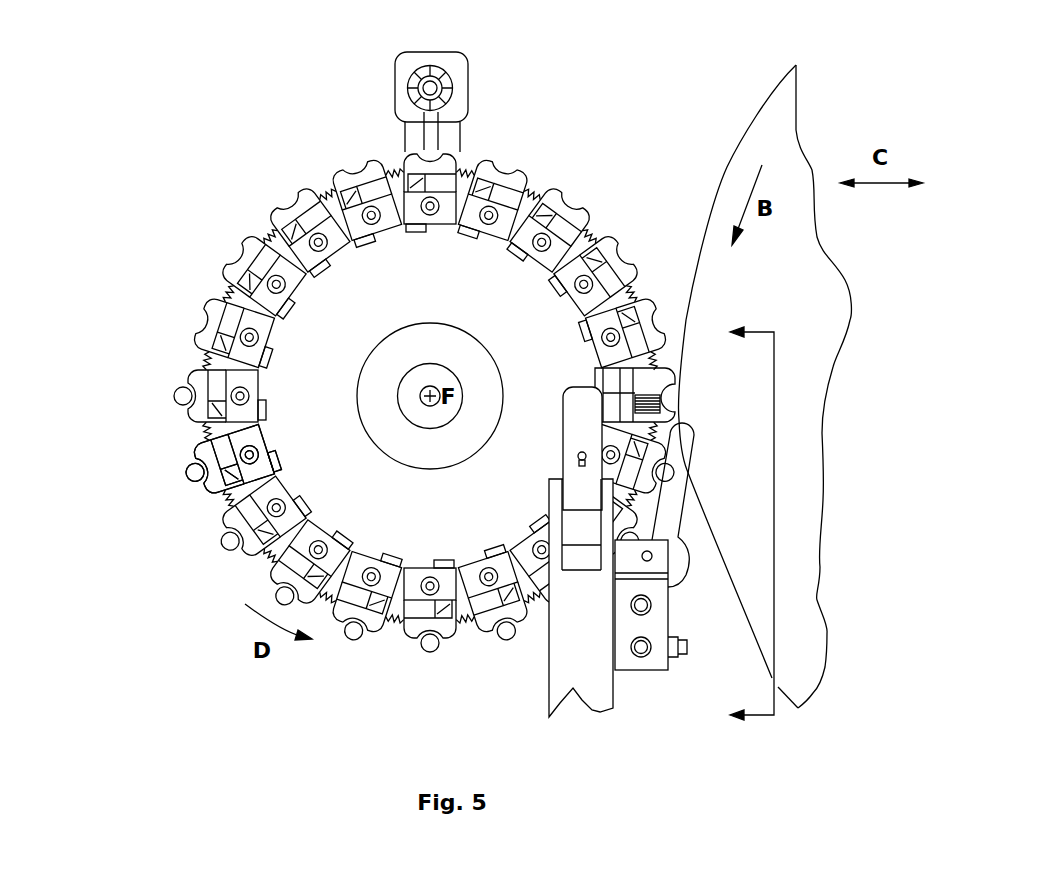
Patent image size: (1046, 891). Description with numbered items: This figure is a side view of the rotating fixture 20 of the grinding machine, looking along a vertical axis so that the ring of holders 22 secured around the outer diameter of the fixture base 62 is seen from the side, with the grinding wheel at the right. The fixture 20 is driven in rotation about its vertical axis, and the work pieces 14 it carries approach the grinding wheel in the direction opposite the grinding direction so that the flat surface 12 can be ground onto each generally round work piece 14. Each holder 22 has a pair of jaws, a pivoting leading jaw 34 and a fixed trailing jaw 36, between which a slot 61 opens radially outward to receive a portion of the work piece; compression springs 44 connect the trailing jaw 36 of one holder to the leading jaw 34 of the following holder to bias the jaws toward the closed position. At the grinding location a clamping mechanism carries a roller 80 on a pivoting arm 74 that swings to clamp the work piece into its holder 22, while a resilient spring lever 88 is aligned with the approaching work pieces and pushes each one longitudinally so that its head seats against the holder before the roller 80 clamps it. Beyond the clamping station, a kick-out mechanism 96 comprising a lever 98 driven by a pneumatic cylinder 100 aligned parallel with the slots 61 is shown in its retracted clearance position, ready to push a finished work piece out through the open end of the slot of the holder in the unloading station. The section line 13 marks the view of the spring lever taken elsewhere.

The flat surface 12 is at (565, 200).
The section line 13 is at (734, 524).
The work piece 14 is at (171, 393).
The fixture 20 is at (435, 685).
The holder 22 is at (638, 215).
The leading jaw 34 is at (556, 192).
The trailing jaw 36 is at (590, 210).
The compression spring 44 is at (225, 295).
The slot 61 is at (438, 148).
The fixture base 62 is at (443, 519).
The arm 74 is at (593, 425).
The roller 80 is at (647, 390).
The spring lever 88 is at (693, 461).
The kick-out mechanism 96 is at (490, 78).
The lever 98 is at (430, 128).
The pneumatic cylinder 100 is at (430, 52).